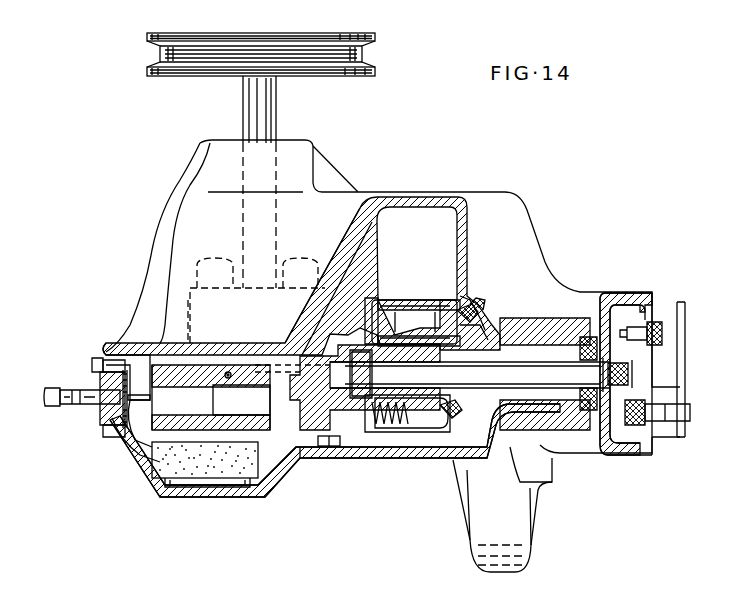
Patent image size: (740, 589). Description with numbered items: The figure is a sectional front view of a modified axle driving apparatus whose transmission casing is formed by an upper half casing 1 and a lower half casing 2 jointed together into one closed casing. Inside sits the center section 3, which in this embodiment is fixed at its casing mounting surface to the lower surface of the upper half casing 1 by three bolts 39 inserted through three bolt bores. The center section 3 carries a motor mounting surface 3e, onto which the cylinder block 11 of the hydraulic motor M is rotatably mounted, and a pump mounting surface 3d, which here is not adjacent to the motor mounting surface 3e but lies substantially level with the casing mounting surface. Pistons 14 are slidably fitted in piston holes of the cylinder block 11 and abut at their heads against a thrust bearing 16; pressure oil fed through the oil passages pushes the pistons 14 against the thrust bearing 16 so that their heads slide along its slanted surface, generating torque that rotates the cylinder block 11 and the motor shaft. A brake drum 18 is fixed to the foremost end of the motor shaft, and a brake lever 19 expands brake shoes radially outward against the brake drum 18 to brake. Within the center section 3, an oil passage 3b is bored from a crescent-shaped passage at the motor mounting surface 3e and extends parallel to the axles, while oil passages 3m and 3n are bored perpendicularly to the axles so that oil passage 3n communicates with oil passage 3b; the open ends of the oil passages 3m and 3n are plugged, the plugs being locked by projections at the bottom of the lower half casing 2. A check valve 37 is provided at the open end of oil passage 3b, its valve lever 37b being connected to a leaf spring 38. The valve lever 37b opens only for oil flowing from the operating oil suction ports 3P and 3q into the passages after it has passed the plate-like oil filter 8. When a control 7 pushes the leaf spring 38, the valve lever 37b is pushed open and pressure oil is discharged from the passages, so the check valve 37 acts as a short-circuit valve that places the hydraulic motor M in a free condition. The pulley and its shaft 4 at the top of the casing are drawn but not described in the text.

The upper half casing 1 is at (493, 192).
The lower half casing 2 is at (277, 492).
The center section 3 is at (301, 285).
The oil passage 3b is at (266, 406).
The pump mounting surface 3d is at (268, 345).
The motor mounting surface 3e is at (380, 296).
The oil passage 3m is at (300, 462).
The oil passage 3n is at (232, 370).
The operating oil suction port 3P is at (178, 480).
The operating oil suction port 3q is at (207, 482).
The pulley shaft 4 is at (274, 92).
The control 7 is at (43, 397).
The plate-like oil filter 8 is at (225, 492).
The cylinder block 11 is at (434, 300).
The piston 14 is at (448, 412).
The thrust bearing 16 is at (472, 323).
The brake drum 18 is at (610, 305).
The brake lever 19 is at (684, 300).
The check valve 37 is at (146, 448).
The valve lever 37b is at (138, 440).
The leaf spring 38 is at (140, 395).
The bolt 39 is at (332, 448).
The hydraulic motor M is at (400, 300).